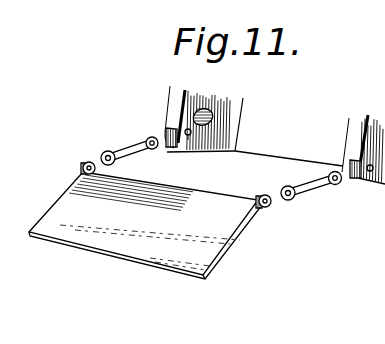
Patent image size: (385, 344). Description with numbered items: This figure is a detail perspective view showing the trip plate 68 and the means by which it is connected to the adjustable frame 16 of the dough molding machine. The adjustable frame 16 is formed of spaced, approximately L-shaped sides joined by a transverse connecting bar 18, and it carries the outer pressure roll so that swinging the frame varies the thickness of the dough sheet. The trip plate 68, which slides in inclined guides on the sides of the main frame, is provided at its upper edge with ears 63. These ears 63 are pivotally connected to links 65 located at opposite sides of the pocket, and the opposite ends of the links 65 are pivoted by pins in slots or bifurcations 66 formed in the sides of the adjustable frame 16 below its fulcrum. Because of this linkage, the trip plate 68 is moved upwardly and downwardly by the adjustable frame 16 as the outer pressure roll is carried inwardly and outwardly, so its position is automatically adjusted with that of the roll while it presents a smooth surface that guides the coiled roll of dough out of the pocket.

The adjustable frame 16 is at (346, 141).
The transverse connecting bar 18 is at (289, 144).
The ears 63 is at (84, 166).
The links 65 is at (136, 140).
The slots or bifurcations 66 is at (173, 147).
The trip plate 68 is at (127, 247).